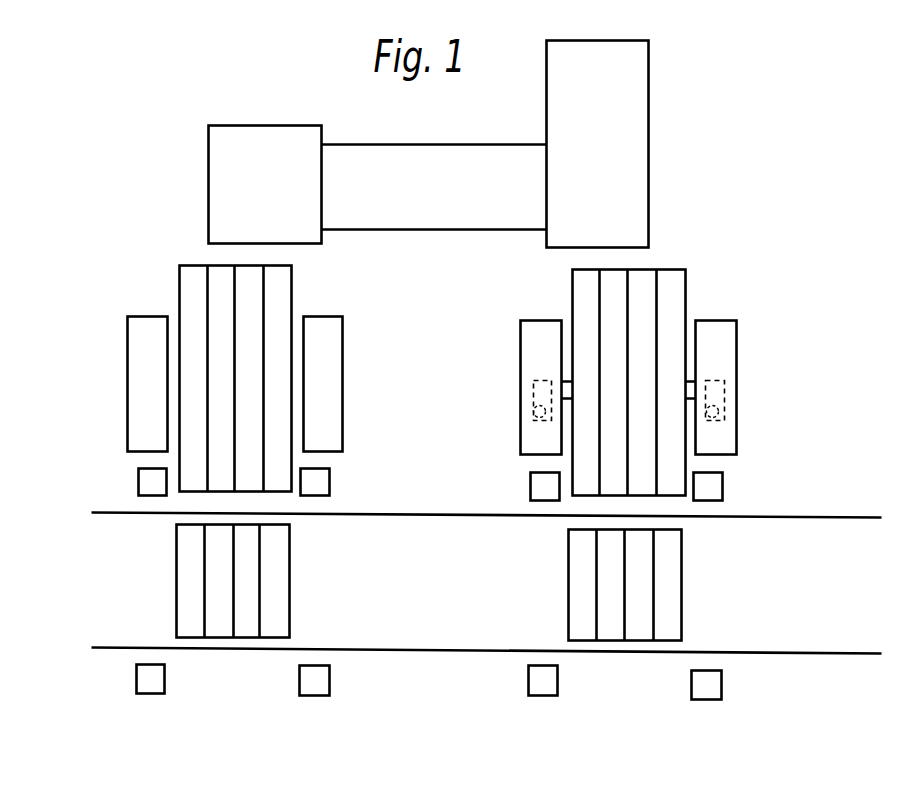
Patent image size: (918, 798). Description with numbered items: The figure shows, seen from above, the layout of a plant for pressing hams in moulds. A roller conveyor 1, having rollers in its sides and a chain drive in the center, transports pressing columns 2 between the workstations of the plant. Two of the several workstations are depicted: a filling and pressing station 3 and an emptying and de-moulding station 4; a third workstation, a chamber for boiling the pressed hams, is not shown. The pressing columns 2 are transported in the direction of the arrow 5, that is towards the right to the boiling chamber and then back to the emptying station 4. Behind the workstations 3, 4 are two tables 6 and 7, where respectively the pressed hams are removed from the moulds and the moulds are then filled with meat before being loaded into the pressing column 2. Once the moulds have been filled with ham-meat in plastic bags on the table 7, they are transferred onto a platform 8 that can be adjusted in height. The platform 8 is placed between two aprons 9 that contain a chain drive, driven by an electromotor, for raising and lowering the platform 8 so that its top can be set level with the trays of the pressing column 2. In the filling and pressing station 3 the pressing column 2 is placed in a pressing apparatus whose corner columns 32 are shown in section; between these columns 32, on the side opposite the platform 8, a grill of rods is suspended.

The roller conveyor 1 is at (388, 627).
The pressing column 2 is at (247, 636).
The filling and pressing station 3 is at (757, 292).
The emptying and de-moulding station 4 is at (156, 220).
The arrow 5 is at (142, 578).
The table 6 is at (235, 135).
The table 7 is at (628, 145).
The platform 8 is at (682, 262).
The aprons 9 is at (133, 353).
The corner columns 32 is at (529, 488).